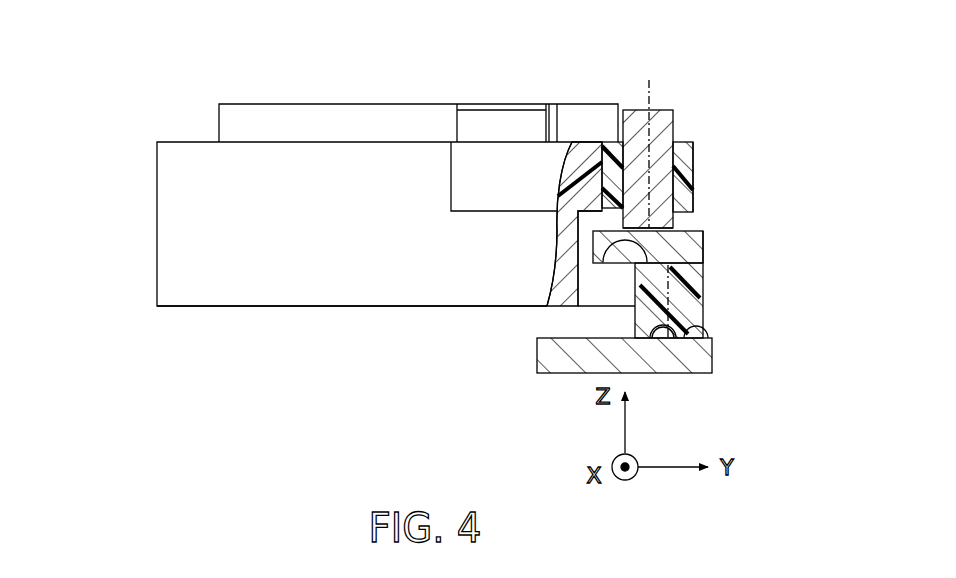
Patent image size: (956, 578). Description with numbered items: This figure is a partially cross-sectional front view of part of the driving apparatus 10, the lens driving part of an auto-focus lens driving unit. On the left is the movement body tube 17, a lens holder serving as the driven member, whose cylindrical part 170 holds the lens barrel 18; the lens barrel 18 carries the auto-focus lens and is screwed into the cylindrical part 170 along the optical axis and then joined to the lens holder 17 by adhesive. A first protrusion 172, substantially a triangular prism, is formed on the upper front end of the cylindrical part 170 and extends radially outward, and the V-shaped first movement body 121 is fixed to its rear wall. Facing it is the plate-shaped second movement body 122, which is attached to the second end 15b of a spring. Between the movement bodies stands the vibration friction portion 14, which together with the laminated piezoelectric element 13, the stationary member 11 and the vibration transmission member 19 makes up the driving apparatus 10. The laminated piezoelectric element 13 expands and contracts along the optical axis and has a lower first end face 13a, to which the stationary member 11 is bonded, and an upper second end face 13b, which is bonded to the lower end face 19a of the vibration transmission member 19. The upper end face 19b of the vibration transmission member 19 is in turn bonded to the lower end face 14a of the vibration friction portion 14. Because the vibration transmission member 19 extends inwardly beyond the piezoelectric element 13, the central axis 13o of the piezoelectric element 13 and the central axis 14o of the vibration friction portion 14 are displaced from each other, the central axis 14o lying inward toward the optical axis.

The driving apparatus 10 is at (463, 99).
The stationary member 11 is at (712, 341).
The laminated piezoelectric element 13 is at (697, 311).
The first end face 13a is at (704, 352).
The second end face 13b is at (699, 279).
The central axis of the electromechanical transducer element 13o is at (670, 378).
The vibration friction portion 14 is at (676, 131).
The lower end face of the vibration friction portion 14a is at (672, 221).
The central axis of the vibration friction portion 14o is at (653, 97).
The second end of the spring 15b is at (696, 174).
The movement body tube 17 is at (178, 210).
The cylindrical part 170 is at (258, 275).
The first protrusion 172 is at (588, 157).
The lens barrel 18 is at (233, 122).
The vibration transmission member 19 is at (678, 241).
The lower end face of the vibration transmission member 19a is at (612, 244).
The upper end face of the vibration transmission member 19b is at (698, 253).
The first movement body 121 is at (606, 148).
The second movement body 122 is at (682, 157).